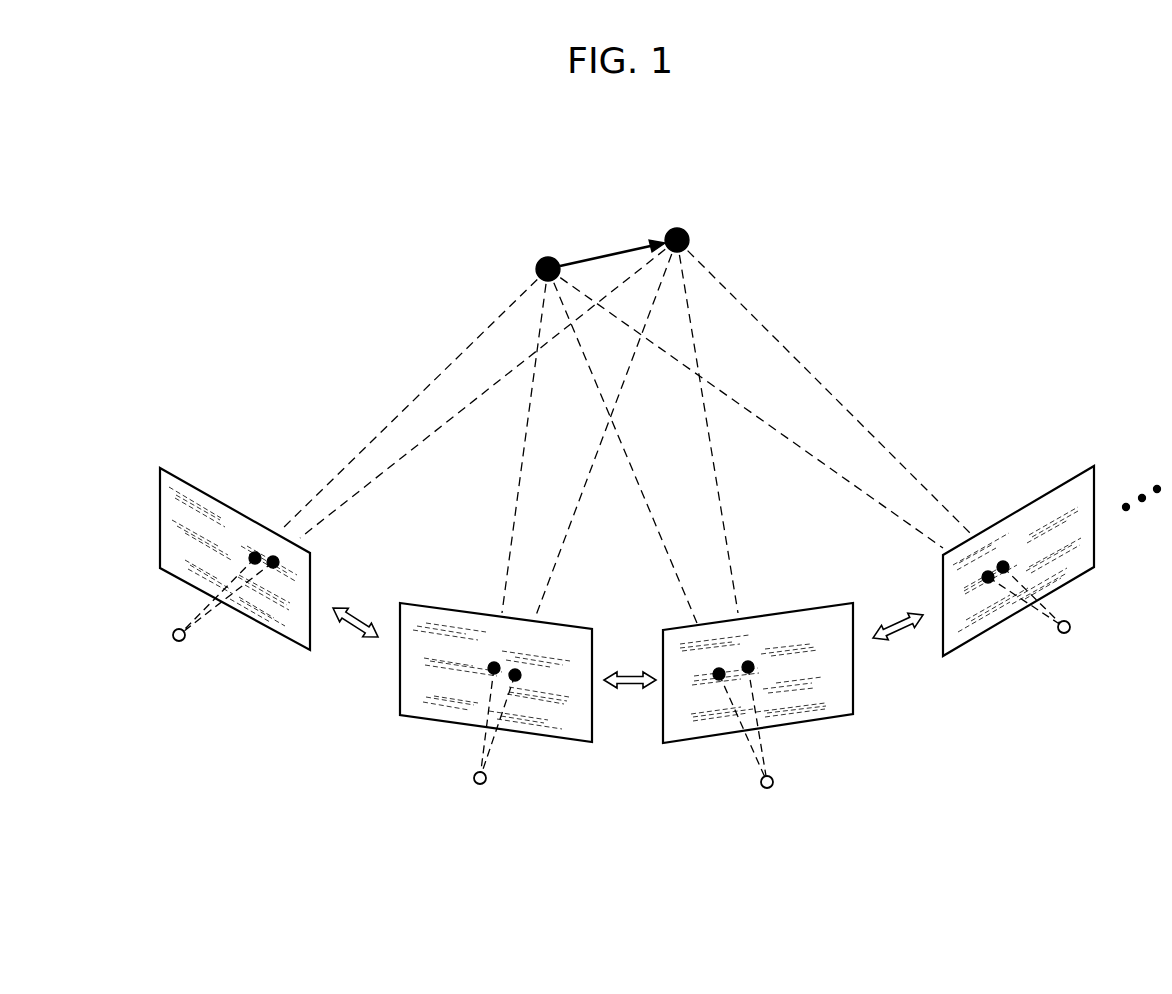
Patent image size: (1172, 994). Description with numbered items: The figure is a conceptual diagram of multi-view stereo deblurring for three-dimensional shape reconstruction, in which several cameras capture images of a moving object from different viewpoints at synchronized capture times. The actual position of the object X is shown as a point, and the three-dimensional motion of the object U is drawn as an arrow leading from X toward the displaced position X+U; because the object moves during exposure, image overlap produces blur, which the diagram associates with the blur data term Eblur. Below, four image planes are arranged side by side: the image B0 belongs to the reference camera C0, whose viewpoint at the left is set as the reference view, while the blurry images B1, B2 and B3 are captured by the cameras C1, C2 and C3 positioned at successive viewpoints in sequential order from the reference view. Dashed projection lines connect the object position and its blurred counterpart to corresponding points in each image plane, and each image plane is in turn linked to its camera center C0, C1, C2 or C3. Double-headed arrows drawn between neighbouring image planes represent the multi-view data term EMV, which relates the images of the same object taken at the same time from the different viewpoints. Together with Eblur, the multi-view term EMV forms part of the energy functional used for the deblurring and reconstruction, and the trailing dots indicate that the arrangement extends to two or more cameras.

The actual position of the object X is at (537, 254).
The blur data term Eblur is at (699, 225).
The 3D motion of the object U is at (612, 238).
The image at reference view B0 is at (418, 445).
The blurry image at first viewpoint B1 is at (538, 491).
The blurry image at second viewpoint B2 is at (700, 491).
The blurry image at third viewpoint B3 is at (821, 448).
The reference camera C0 is at (209, 623).
The first camera C1 is at (491, 749).
The second camera C2 is at (751, 751).
The third camera C3 is at (1035, 623).
The multi-view data term EMV is at (628, 637).